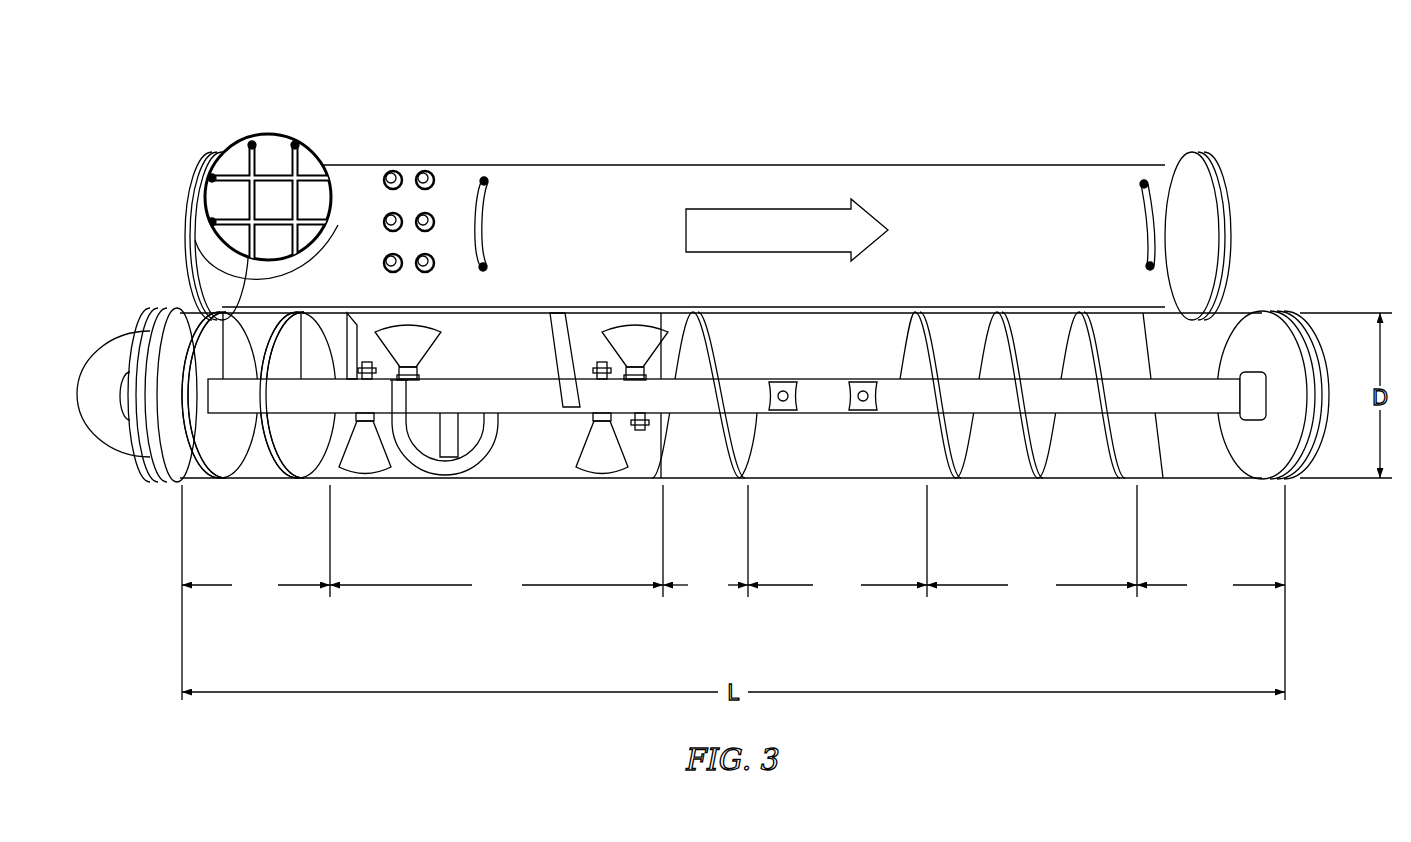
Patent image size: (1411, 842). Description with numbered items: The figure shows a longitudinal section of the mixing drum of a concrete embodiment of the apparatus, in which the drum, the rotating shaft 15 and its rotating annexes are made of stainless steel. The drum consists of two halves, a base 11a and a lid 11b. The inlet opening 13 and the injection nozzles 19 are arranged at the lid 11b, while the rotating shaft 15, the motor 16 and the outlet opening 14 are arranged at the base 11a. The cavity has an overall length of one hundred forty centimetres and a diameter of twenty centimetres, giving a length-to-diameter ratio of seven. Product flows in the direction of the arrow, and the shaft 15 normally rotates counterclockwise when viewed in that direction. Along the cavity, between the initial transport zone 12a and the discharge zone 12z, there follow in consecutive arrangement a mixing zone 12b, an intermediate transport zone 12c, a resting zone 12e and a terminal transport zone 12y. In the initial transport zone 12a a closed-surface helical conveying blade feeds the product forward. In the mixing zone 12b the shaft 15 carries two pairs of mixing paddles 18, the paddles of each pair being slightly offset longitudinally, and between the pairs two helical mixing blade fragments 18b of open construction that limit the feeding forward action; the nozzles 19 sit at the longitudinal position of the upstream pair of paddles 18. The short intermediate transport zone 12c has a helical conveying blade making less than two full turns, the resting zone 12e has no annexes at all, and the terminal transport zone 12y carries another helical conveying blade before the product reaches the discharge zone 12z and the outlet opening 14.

The base 11a is at (1195, 460).
The lid 11b is at (1000, 165).
The initial transport zone 12a is at (256, 541).
The mixing zone 12b is at (496, 541).
The intermediate transport zone 12c is at (705, 541).
The resting zone 12e is at (837, 541).
The terminal transport zone 12y is at (1032, 541).
The discharge zone 12z is at (1211, 585).
The inlet opening 13 is at (272, 134).
The outlet opening 14 is at (1122, 338).
The rotating shaft 15 is at (1193, 388).
The motor 16 is at (112, 355).
The mixing paddles 18 is at (373, 465).
The helical mixing blade fragments 18b is at (420, 470).
The injection nozzles 19 is at (390, 256).